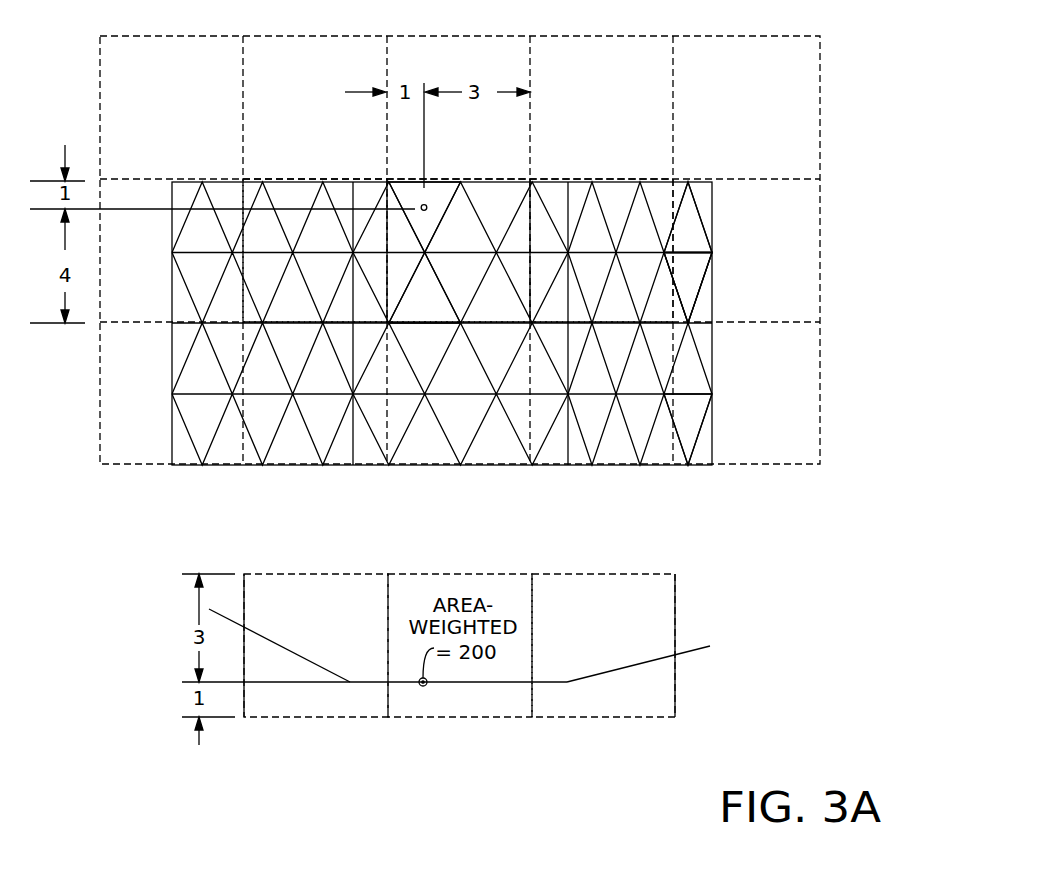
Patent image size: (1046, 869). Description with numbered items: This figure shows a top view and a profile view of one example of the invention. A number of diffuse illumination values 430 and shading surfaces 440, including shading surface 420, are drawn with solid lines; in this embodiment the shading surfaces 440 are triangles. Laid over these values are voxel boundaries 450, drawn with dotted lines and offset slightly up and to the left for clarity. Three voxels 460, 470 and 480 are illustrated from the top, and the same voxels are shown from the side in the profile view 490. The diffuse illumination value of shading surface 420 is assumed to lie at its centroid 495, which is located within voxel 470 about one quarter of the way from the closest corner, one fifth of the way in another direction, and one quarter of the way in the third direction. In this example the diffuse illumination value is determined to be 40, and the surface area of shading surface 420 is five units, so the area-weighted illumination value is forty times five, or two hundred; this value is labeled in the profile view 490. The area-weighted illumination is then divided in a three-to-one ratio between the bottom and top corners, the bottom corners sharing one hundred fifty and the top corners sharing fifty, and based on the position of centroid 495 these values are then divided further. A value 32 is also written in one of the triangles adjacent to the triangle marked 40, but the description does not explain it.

The voxel boundaries 450 is at (822, 75).
The voxel 460 is at (263, 178).
The voxel 470 is at (506, 177).
The voxel 480 is at (664, 177).
The centroid 495 is at (405, 197).
The shading surface 420 is at (422, 205).
The diffuse illumination values 430 is at (690, 275).
The shading surfaces 440 is at (690, 410).
The diffuse illumination value 40 is at (550, 252).
The triangle area value 32 is at (688, 288).
The profile view 490 is at (766, 642).